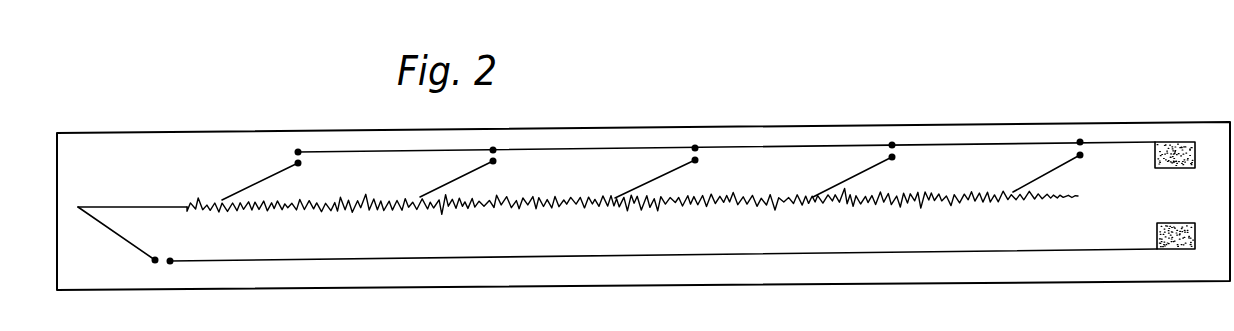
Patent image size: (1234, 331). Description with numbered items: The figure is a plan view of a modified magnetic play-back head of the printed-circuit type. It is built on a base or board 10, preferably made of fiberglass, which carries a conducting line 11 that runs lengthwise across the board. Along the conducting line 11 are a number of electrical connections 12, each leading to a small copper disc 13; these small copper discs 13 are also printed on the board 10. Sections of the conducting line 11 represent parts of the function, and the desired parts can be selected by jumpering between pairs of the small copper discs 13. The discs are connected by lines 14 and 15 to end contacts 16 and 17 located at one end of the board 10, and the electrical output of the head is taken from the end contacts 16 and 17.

The base or board 10 is at (841, 277).
The conducting line 11 is at (750, 205).
The electrical connections 12 is at (260, 183).
The small copper discs 13 is at (596, 214).
The line 14 is at (595, 148).
The line 15 is at (341, 257).
The end contact 16 is at (1175, 167).
The end contact 17 is at (1171, 224).